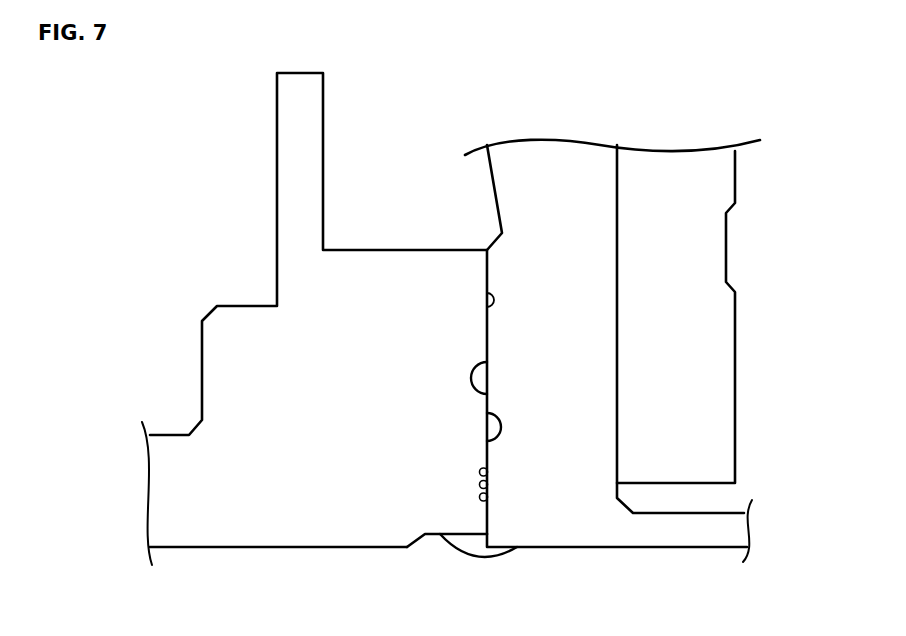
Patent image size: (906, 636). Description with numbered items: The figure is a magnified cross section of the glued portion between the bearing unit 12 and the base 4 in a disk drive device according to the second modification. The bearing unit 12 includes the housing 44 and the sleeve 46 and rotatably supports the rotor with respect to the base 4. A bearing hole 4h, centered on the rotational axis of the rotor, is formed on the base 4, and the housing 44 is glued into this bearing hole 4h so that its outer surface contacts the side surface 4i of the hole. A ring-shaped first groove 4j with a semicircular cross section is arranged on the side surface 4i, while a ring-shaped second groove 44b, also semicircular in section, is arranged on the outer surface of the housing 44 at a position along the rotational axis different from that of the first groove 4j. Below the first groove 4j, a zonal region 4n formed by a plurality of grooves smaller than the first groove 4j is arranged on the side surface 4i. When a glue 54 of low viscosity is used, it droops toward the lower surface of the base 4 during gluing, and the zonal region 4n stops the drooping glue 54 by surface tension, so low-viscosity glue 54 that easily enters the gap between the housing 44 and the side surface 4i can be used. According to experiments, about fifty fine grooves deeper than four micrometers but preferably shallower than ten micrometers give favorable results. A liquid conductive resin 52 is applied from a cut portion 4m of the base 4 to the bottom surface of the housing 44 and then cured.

The base 4 is at (160, 489).
The bearing hole 4h is at (447, 261).
The side surface 4i is at (488, 306).
The first groove 4j is at (471, 375).
The cut portion 4m is at (430, 537).
The zonal region 4n is at (471, 465).
The bearing unit 12 is at (612, 315).
The housing 44 is at (581, 158).
The sleeve 46 is at (676, 293).
The second groove 44b is at (500, 428).
The liquid conductive resin 52 is at (477, 540).
The glue 54 is at (497, 396).